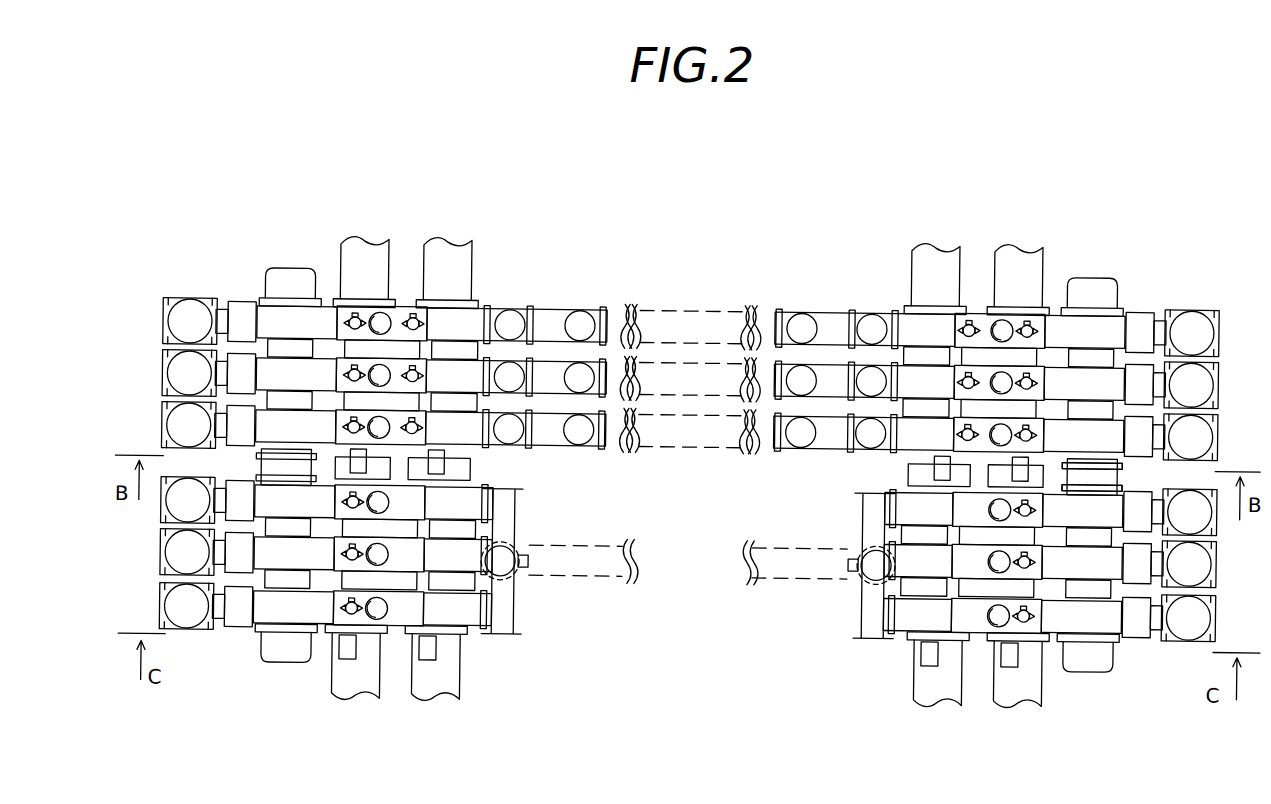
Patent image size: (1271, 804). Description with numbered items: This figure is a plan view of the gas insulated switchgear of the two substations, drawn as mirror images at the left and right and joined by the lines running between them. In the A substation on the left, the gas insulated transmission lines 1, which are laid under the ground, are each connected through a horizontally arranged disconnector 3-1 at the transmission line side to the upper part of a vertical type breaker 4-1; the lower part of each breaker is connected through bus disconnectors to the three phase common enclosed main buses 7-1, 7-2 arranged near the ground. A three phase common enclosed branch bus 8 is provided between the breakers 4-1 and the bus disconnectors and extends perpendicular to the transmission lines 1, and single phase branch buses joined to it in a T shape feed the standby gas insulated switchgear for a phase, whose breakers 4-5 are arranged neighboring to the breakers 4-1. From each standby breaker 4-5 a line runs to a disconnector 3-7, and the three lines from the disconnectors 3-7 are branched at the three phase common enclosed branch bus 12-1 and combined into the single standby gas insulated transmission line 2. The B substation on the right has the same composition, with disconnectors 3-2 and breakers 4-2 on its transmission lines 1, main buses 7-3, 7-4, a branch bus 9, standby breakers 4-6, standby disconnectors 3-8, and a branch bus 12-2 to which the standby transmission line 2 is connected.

The gas insulated transmission lines 1 is at (688, 300).
The standby gas insulated transmission line 2 is at (700, 574).
The disconnectors 3-1 is at (384, 310).
The disconnectors 3-2 is at (1000, 312).
The disconnectors 3-7 is at (384, 610).
The disconnectors 3-8 is at (997, 615).
The breakers 4-1 is at (193, 300).
The breakers 4-2 is at (1184, 302).
The breakers 4-5 is at (194, 616).
The breakers 4-6 is at (1191, 620).
The three phase common enclosed main bus 7-1 is at (356, 248).
The three phase common enclosed main bus 7-2 is at (454, 250).
The three phase common enclosed main bus 7-3 is at (934, 254).
The three phase common enclosed main bus 7-4 is at (1016, 253).
The three phase common enclosed branch bus 8 is at (287, 267).
The three phase common enclosed branch bus 9 is at (1091, 269).
The three phase common enclosed branch bus 12-1 is at (522, 507).
The three phase common enclosed branch bus 12-2 is at (864, 512).